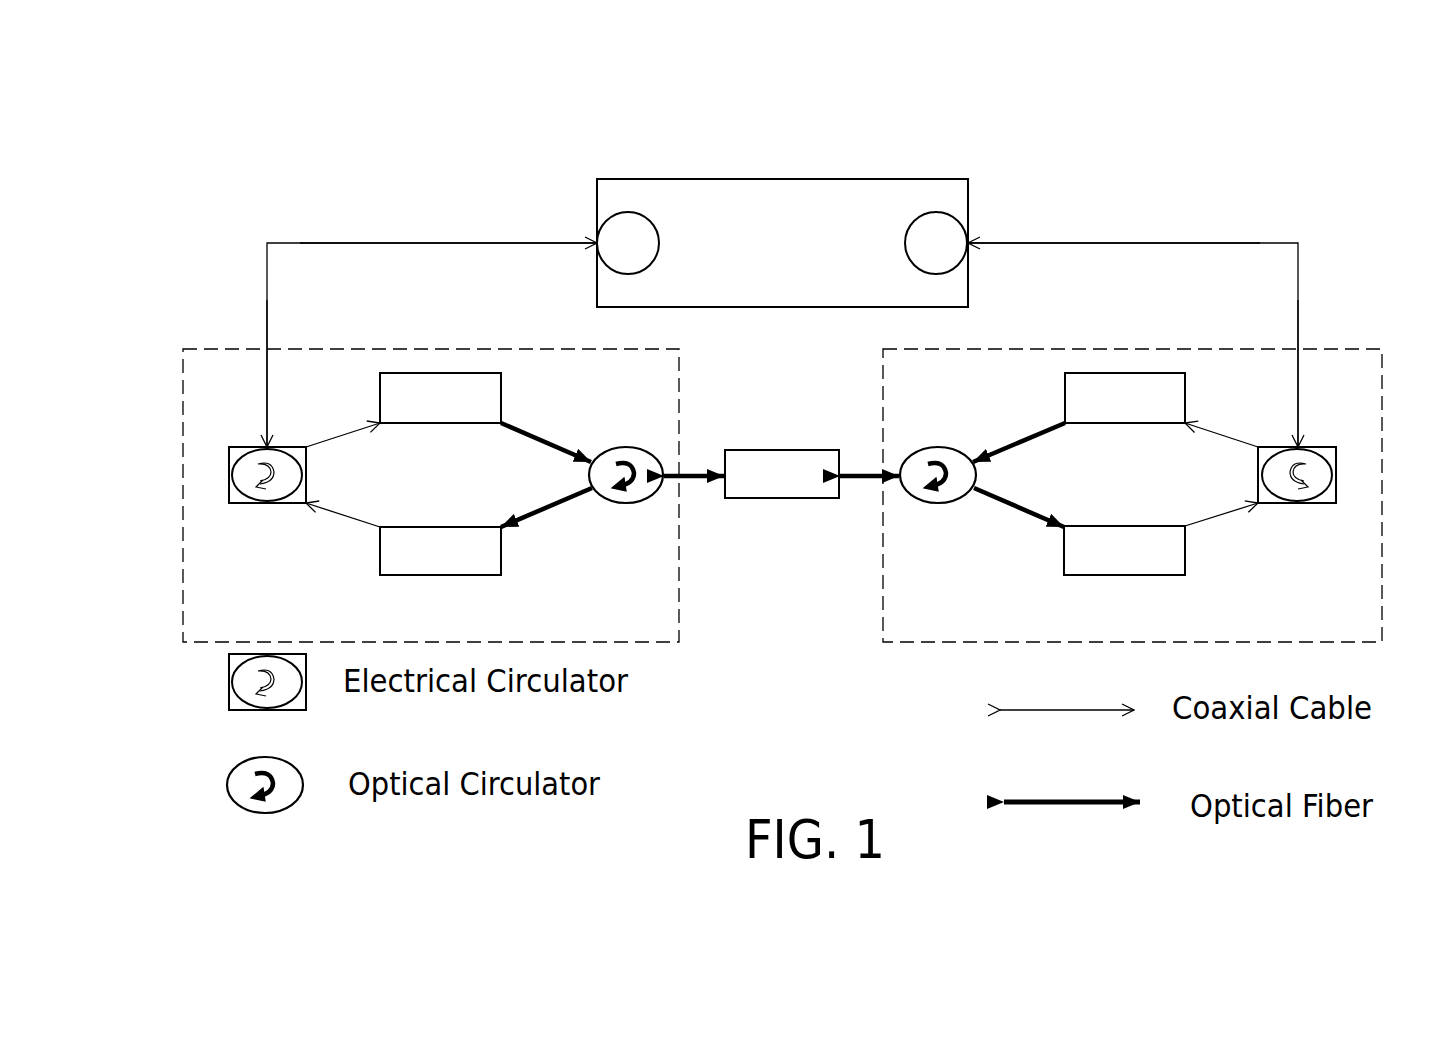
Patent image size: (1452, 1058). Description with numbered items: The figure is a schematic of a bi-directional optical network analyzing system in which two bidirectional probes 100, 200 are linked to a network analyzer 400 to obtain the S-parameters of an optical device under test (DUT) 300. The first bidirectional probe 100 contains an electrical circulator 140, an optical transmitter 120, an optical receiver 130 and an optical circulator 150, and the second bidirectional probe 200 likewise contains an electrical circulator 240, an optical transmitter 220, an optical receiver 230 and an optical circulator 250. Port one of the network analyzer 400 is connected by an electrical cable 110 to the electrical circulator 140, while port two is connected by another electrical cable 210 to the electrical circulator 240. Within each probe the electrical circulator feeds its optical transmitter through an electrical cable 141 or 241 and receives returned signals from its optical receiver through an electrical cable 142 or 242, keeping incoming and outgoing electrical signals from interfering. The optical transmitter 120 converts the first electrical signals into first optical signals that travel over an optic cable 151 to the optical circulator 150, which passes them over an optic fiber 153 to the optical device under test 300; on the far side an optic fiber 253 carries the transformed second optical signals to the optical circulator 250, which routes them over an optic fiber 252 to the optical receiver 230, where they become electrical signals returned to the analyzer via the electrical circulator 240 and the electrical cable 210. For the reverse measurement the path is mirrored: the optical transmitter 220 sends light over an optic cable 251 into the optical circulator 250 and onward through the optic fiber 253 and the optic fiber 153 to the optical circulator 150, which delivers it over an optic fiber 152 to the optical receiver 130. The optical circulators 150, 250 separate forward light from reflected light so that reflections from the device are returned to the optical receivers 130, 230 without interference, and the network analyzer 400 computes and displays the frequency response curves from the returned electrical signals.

The first bidirectional probe 100 is at (248, 390).
The electrical cable 110 is at (456, 245).
The optical transmitter 120 is at (440, 373).
The optical receiver 130 is at (451, 575).
The electrical circulator 140 is at (229, 472).
The electrical cable 141 is at (345, 431).
The electrical cable 142 is at (333, 518).
The optical circulator 150 is at (631, 503).
The optic cable 151 is at (552, 444).
The optic fiber 152 is at (555, 512).
The optic fiber 153 is at (696, 467).
The second bidirectional probe 200 is at (1368, 390).
The electrical cable 210 is at (1117, 245).
The optical transmitter 220 is at (1127, 373).
The optical receiver 230 is at (1136, 575).
The electrical circulator 240 is at (1336, 472).
The electrical cable 241 is at (1222, 429).
The electrical cable 242 is at (1226, 520).
The optical circulator 250 is at (940, 503).
The optic cable 251 is at (1013, 444).
The optic fiber 252 is at (1017, 512).
The optic fiber 253 is at (869, 467).
The optical device under test 300 is at (783, 450).
The network analyzer 400 is at (775, 174).